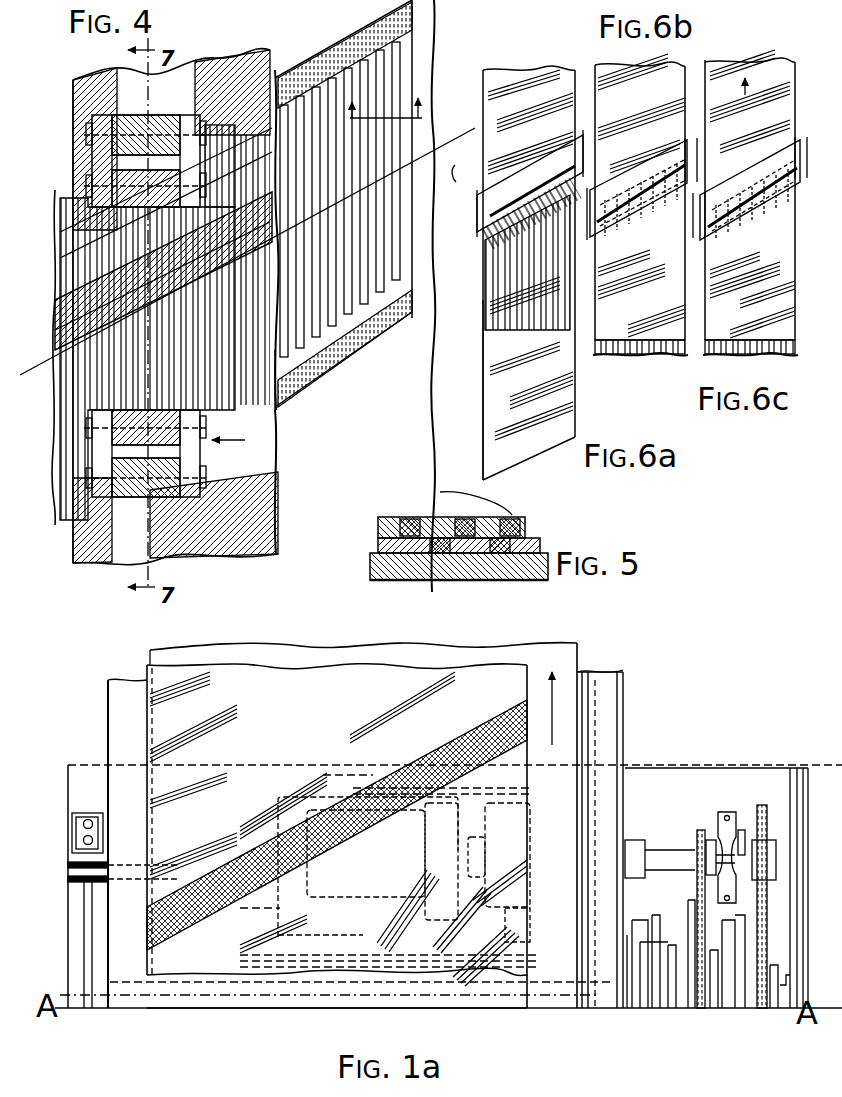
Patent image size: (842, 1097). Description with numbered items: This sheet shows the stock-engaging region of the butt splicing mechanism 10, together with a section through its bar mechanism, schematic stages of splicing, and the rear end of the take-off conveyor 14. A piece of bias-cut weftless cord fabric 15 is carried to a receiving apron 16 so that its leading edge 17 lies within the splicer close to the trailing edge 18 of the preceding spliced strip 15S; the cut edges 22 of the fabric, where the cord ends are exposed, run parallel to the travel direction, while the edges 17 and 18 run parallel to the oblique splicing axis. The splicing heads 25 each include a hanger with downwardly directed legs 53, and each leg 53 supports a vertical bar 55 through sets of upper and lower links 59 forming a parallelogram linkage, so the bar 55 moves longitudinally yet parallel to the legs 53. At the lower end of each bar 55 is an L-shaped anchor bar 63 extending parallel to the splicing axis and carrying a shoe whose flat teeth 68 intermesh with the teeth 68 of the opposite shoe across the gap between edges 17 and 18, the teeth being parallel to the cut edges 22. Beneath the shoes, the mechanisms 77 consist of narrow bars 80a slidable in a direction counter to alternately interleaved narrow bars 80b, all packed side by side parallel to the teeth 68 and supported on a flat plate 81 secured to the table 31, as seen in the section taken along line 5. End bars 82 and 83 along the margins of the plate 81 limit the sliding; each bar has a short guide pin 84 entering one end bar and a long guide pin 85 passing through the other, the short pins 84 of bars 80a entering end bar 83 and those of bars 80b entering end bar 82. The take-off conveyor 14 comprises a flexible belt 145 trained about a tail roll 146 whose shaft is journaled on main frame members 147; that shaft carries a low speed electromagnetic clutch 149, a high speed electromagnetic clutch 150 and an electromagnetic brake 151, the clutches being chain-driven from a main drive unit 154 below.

In FIG. 4, the cut edges 22 is at (73, 95).
In FIG. 6A, the cut edges 22 is at (483, 432).
In FIG. 4, the downwardly directed parallel legs 53 is at (100, 114).
In FIG. 4, the lower links 59 is at (115, 182).
In FIG. 4, the vertical bar 55 is at (115, 240).
In FIG. 4, the transverse anchor bar 63 is at (62, 296).
In FIG. 4, the flat teeth 68 is at (70, 340).
In FIG. 4, the spliced strip of fabric 15S is at (232, 58).
In FIG. 6A, the spliced strip of fabric 15S is at (508, 82).
In FIG. 6B, the spliced strip of fabric 15S is at (616, 78).
In FIG. 6C, the spliced strip of fabric 15S is at (760, 306).
In FIG. 1A, the spliced strip of fabric 15S is at (228, 680).
In FIG. 4, the mechanisms 77 is at (437, 52).
In FIG. 5, the mechanisms 77 is at (528, 520).
In FIG. 4, the end bar 82 is at (278, 70).
In FIG. 4, the short axial guide pin 84 is at (296, 80).
In FIG. 4, the end bar 83 is at (350, 356).
In FIG. 4, the long guide pin 85 is at (330, 42).
In FIG. 4, the narrow bars 80a is at (388, 270).
In FIG. 5, the narrow bars 80a is at (418, 517).
In FIG. 4, the narrow bars 80b is at (385, 236).
In FIG. 5, the narrow bars 80b is at (432, 568).
In FIG. 4, the section line 5- 5 is at (383, 129).
In FIG. 4, the leading edge 17 is at (262, 216).
In FIG. 6A, the leading edge 17 is at (515, 335).
In FIG. 4, the trailing edge 18 is at (268, 264).
In FIG. 6A, the trailing edge 18 is at (540, 182).
In FIG. 4, the splicing heads 25 is at (278, 462).
In FIG. 4, the bias-cut weftless cord fabric piece 15 is at (277, 518).
In FIG. 6A, the bias-cut weftless cord fabric piece 15 is at (572, 388).
In FIG. 6B, the bias-cut weftless cord fabric piece 15 is at (628, 334).
In FIG. 4, the butt splicing mechanism 10 is at (477, 222).
In FIG. 6A, the receiving apron 16 is at (480, 303).
In FIG. 5, the flat plate 81 is at (540, 545).
In FIG. 5, the table 31 is at (500, 572).
In FIG. 1A, the flexible belt 145 is at (542, 660).
In FIG. 1A, the main frame members 147 is at (600, 700).
In FIG. 1A, the main drive unit 154 is at (283, 813).
In FIG. 1A, the tail roll 146 is at (165, 895).
In FIG. 1A, the stock take-off conveyor 14 is at (268, 1014).
In FIG. 1A, the electromagnetic brake 151 is at (632, 1008).
In FIG. 1A, the high speed electromagnetic clutch 150 is at (682, 1008).
In FIG. 1A, the low speed electromagnetic clutch 149 is at (733, 1008).